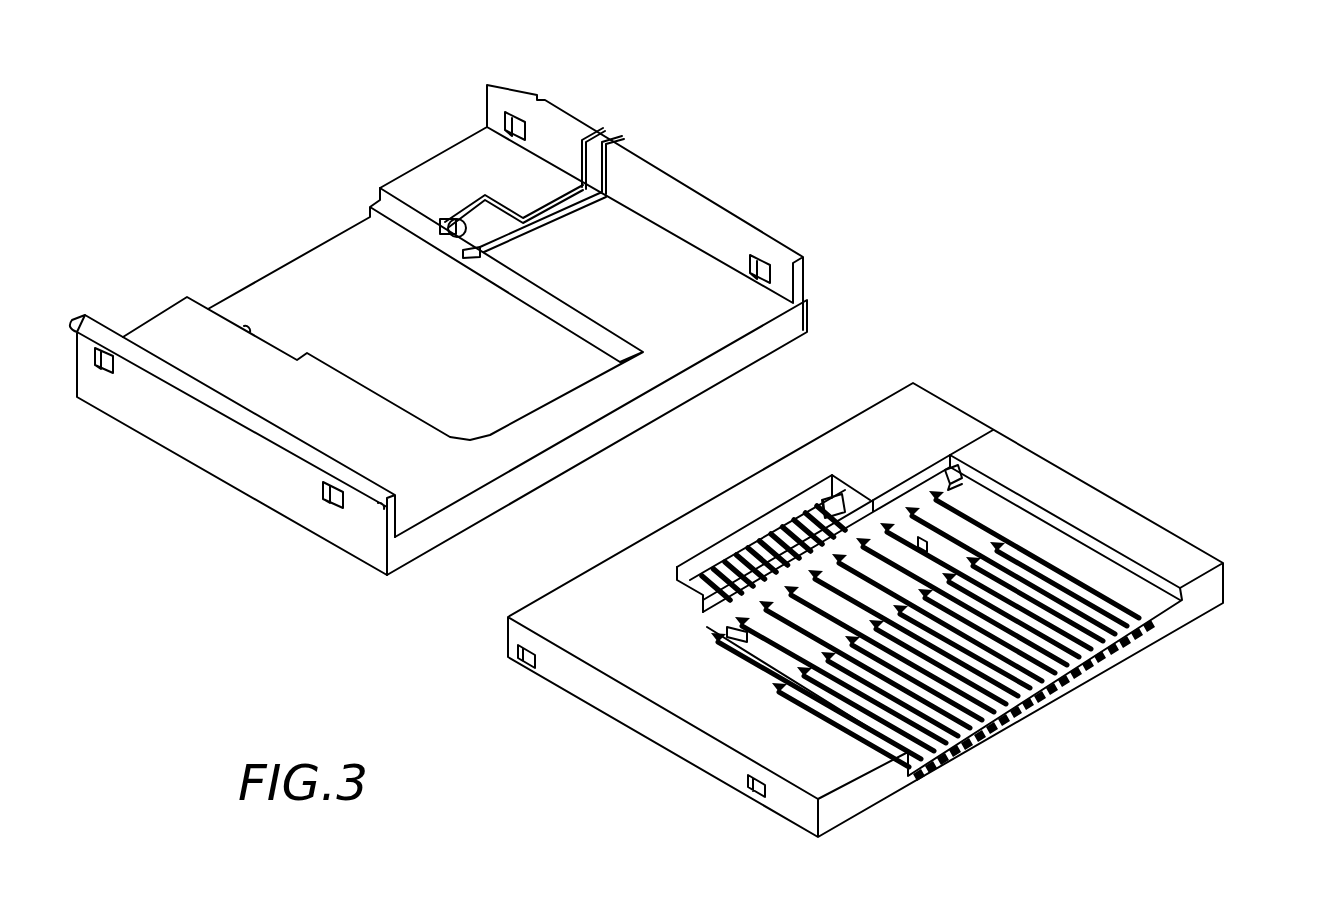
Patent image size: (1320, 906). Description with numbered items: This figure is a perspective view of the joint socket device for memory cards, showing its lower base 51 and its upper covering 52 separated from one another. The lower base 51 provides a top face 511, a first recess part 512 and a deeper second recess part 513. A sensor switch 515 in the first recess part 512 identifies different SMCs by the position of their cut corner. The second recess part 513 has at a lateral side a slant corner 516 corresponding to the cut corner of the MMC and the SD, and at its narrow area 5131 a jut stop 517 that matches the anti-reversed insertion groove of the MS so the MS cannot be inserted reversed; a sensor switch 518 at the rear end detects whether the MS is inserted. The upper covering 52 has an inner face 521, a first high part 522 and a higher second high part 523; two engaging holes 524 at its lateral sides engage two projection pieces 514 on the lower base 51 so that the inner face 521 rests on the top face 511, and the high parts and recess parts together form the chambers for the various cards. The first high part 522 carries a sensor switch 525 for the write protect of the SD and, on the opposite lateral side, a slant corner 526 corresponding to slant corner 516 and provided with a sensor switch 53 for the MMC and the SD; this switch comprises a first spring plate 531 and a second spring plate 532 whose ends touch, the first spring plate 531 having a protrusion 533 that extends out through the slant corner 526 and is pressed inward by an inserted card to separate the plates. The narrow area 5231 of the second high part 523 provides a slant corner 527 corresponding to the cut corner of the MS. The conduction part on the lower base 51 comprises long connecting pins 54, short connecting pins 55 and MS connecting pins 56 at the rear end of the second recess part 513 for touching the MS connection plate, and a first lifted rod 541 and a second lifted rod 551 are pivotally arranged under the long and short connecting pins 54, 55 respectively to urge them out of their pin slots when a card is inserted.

The lower base 51 is at (848, 592).
The top face 511 is at (1182, 552).
The first recess part 512 is at (1047, 537).
The second recess part 513 is at (918, 537).
The narrow area 5131 is at (697, 588).
The projection pieces 514 is at (523, 650).
The sensor switch 515 is at (963, 473).
The slant corner 516 is at (958, 470).
The jut stop 517 is at (687, 578).
The sensor switch 518 is at (857, 533).
The upper covering 52 is at (483, 328).
The inner face 521 is at (458, 158).
The first high part 522 is at (378, 196).
The second high part 523 is at (290, 282).
The narrow area 5231 is at (565, 365).
The engaging holes 524 is at (323, 490).
The sensor switch 525 is at (247, 330).
The slant corner 526 is at (548, 262).
The slant corner 527 is at (470, 440).
The sensor switch 53 is at (483, 241).
The first spring plate 531 is at (450, 207).
The second spring plate 532 is at (548, 165).
The protrusion 533 is at (540, 193).
The long connecting pins 54 is at (823, 643).
The first lifted rod 541 is at (752, 628).
The short connecting pins 55 is at (909, 735).
The second lifted rod 551 is at (805, 625).
The MS connecting pins 56 is at (770, 512).